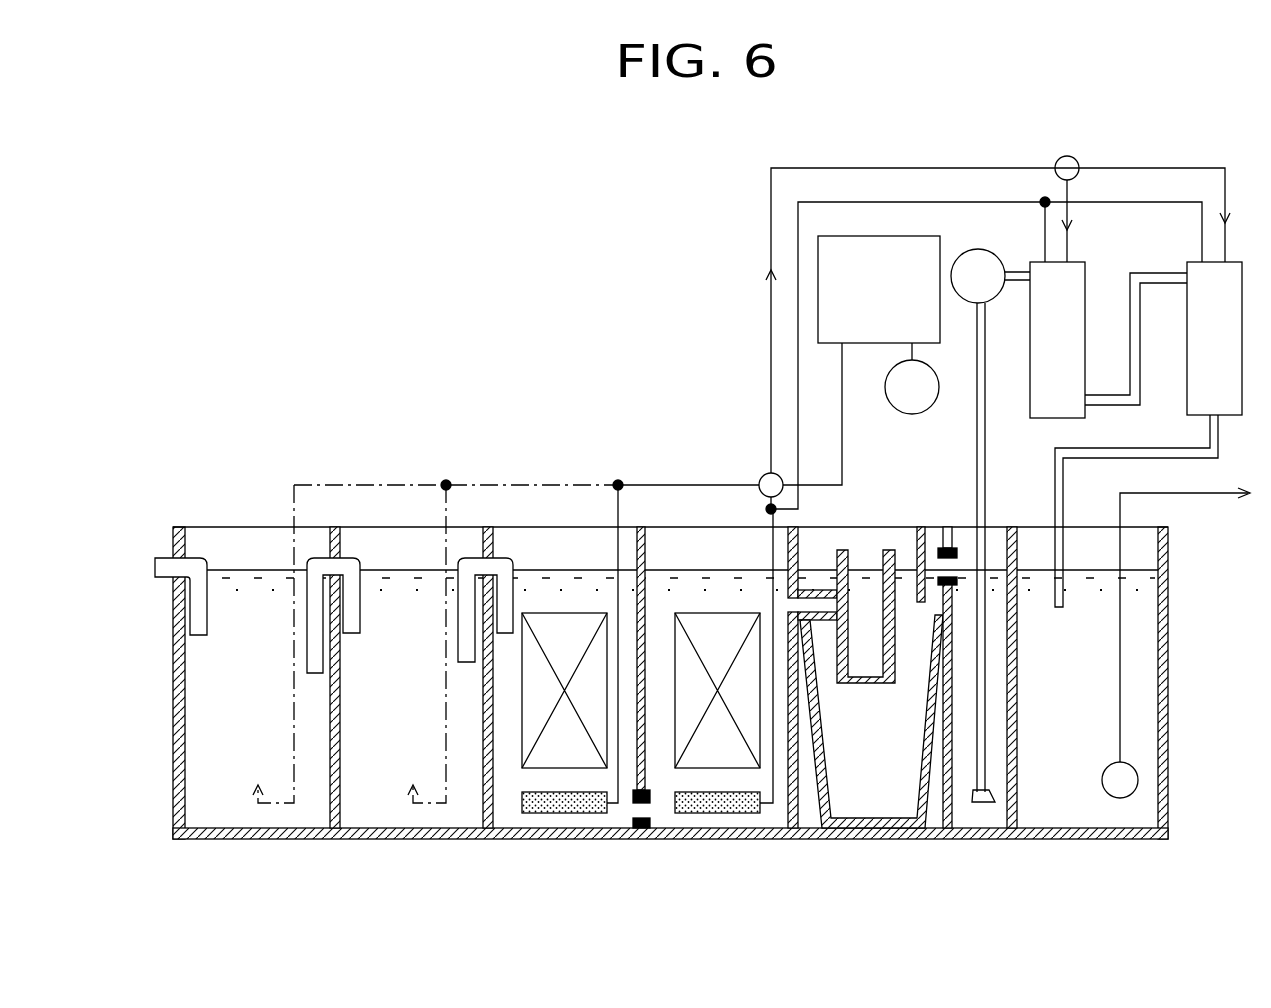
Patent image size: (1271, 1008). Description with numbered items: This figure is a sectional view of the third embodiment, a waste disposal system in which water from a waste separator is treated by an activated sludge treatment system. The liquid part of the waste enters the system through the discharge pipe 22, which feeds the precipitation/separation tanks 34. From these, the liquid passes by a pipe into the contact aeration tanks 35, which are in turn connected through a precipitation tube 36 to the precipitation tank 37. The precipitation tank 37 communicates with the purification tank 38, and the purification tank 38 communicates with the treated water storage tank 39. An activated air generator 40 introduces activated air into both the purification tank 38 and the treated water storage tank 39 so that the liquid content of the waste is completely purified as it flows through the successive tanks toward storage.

The discharge pipe 22 is at (172, 567).
The precipitation/separation tanks 34 is at (362, 810).
The contact aeration tanks 35 is at (663, 822).
The precipitation tube 36 is at (863, 585).
The precipitation tank 37 is at (870, 807).
The purification tank 38 is at (988, 818).
The treated water storage tank 39 is at (1085, 813).
The activated air generator 40 is at (895, 304).